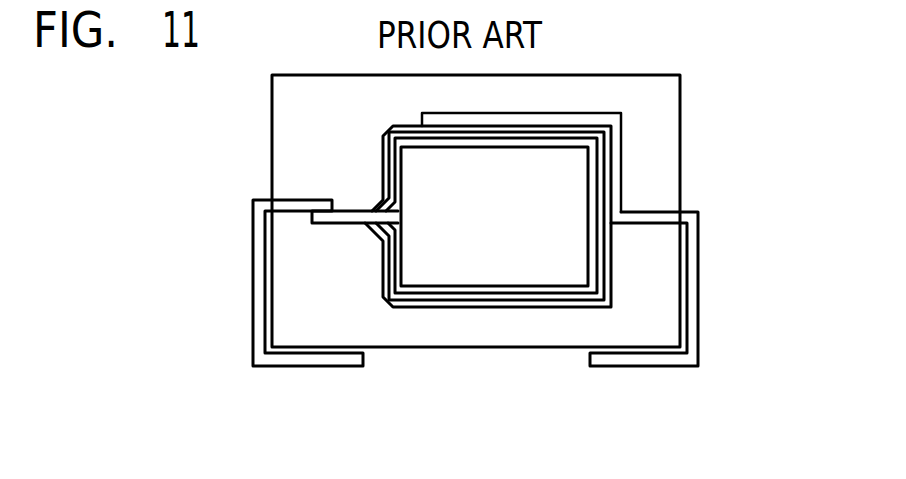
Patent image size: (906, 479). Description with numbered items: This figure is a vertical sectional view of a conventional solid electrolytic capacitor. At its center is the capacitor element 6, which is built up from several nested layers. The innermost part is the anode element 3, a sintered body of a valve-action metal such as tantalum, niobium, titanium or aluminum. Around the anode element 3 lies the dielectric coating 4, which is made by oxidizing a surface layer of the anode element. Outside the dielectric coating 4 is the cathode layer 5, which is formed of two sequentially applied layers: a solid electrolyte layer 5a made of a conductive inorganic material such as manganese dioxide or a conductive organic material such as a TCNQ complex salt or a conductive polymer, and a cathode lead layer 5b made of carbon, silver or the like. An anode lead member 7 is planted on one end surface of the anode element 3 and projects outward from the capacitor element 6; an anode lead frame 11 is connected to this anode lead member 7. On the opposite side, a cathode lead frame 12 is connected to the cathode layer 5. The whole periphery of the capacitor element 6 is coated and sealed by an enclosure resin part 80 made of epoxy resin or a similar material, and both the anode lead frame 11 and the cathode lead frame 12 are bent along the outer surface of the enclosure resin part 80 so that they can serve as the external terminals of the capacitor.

The enclosure resin part 80 is at (647, 138).
The anode lead frame 11 is at (253, 310).
The cathode lead frame 12 is at (695, 320).
The anode lead member 7 is at (334, 218).
The anode element 3 is at (441, 272).
The dielectric coating 4 is at (468, 293).
The cathode layer 5 is at (488, 282).
The solid electrolyte layer 5a is at (494, 300).
The cathode lead layer 5b is at (536, 308).
The capacitor element 6 is at (461, 302).